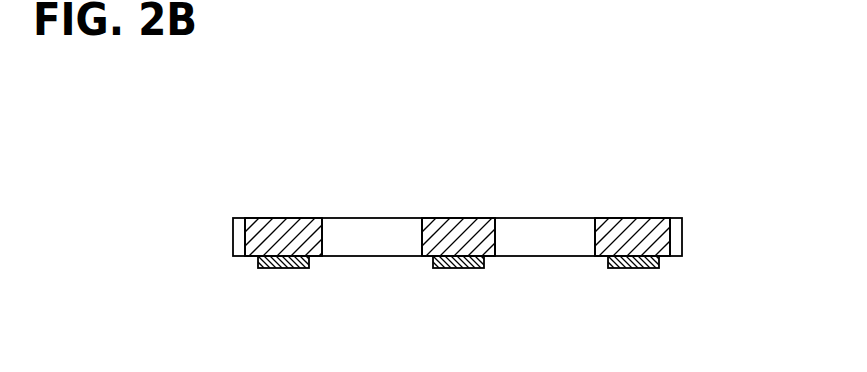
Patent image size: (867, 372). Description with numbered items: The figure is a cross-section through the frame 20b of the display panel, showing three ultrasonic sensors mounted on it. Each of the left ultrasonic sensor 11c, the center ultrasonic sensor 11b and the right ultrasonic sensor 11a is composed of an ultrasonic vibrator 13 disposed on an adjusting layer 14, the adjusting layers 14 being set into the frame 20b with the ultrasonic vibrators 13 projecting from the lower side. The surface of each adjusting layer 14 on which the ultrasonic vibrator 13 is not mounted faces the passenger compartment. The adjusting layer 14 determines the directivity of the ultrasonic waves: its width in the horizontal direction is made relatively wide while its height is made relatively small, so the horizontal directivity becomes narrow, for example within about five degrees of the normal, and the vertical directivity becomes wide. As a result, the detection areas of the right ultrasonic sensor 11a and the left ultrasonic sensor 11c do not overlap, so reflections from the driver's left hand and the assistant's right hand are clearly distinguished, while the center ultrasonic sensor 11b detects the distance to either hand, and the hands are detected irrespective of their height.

The frame 20b is at (365, 218).
The adjusting layer 14 is at (280, 218).
The ultrasonic vibrator 13 is at (282, 270).
The right ultrasonic sensor 11a is at (607, 200).
The center ultrasonic sensor 11b is at (430, 200).
The left ultrasonic sensor 11c is at (257, 203).